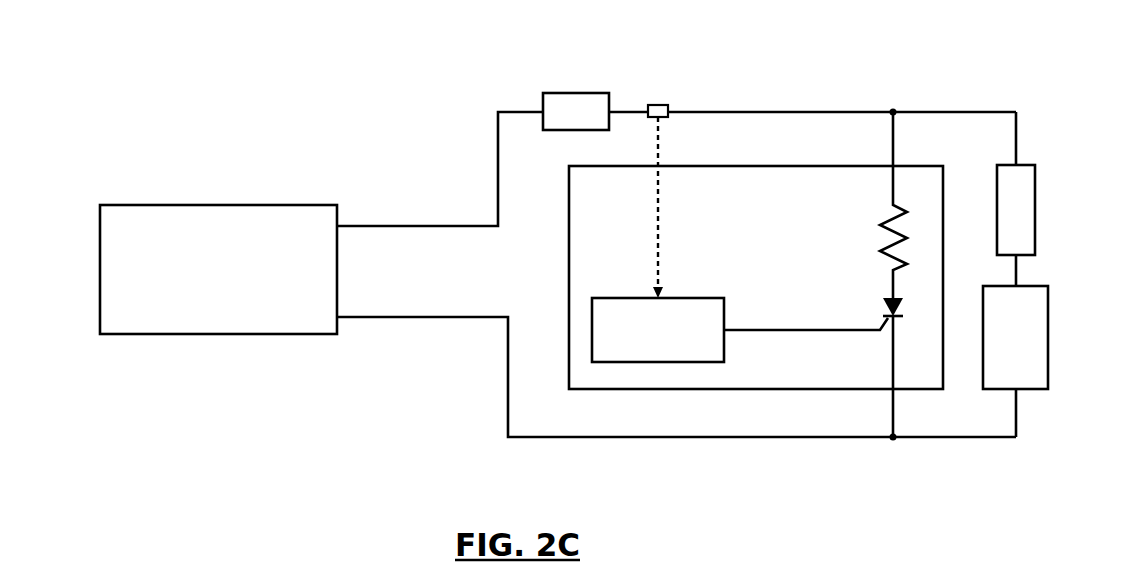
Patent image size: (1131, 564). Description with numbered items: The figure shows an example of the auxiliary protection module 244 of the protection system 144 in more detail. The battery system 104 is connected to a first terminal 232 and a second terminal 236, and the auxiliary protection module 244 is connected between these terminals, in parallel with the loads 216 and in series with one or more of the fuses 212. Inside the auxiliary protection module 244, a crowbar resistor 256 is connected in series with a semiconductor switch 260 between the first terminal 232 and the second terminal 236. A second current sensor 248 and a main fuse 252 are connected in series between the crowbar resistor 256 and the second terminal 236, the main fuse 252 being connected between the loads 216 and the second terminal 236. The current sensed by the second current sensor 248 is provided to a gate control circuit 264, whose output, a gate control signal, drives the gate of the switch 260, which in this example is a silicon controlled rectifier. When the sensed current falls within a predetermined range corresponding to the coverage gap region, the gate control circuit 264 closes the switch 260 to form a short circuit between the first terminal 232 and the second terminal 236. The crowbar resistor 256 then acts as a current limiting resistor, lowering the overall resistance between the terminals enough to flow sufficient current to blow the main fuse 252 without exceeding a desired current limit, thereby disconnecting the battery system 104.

The battery system 104 is at (218, 335).
The protection system 144 is at (788, 84).
The fuses 212 is at (1035, 210).
The loads 216 is at (1033, 389).
The first terminal 232 is at (383, 317).
The second terminal 236 is at (383, 226).
The auxiliary protection module 244 is at (757, 389).
The second current sensor 248 is at (661, 105).
The main fuse 252 is at (576, 93).
The crowbar resistor 256 is at (893, 211).
The semiconductor switch 260 is at (886, 306).
The gate control circuit 264 is at (592, 325).